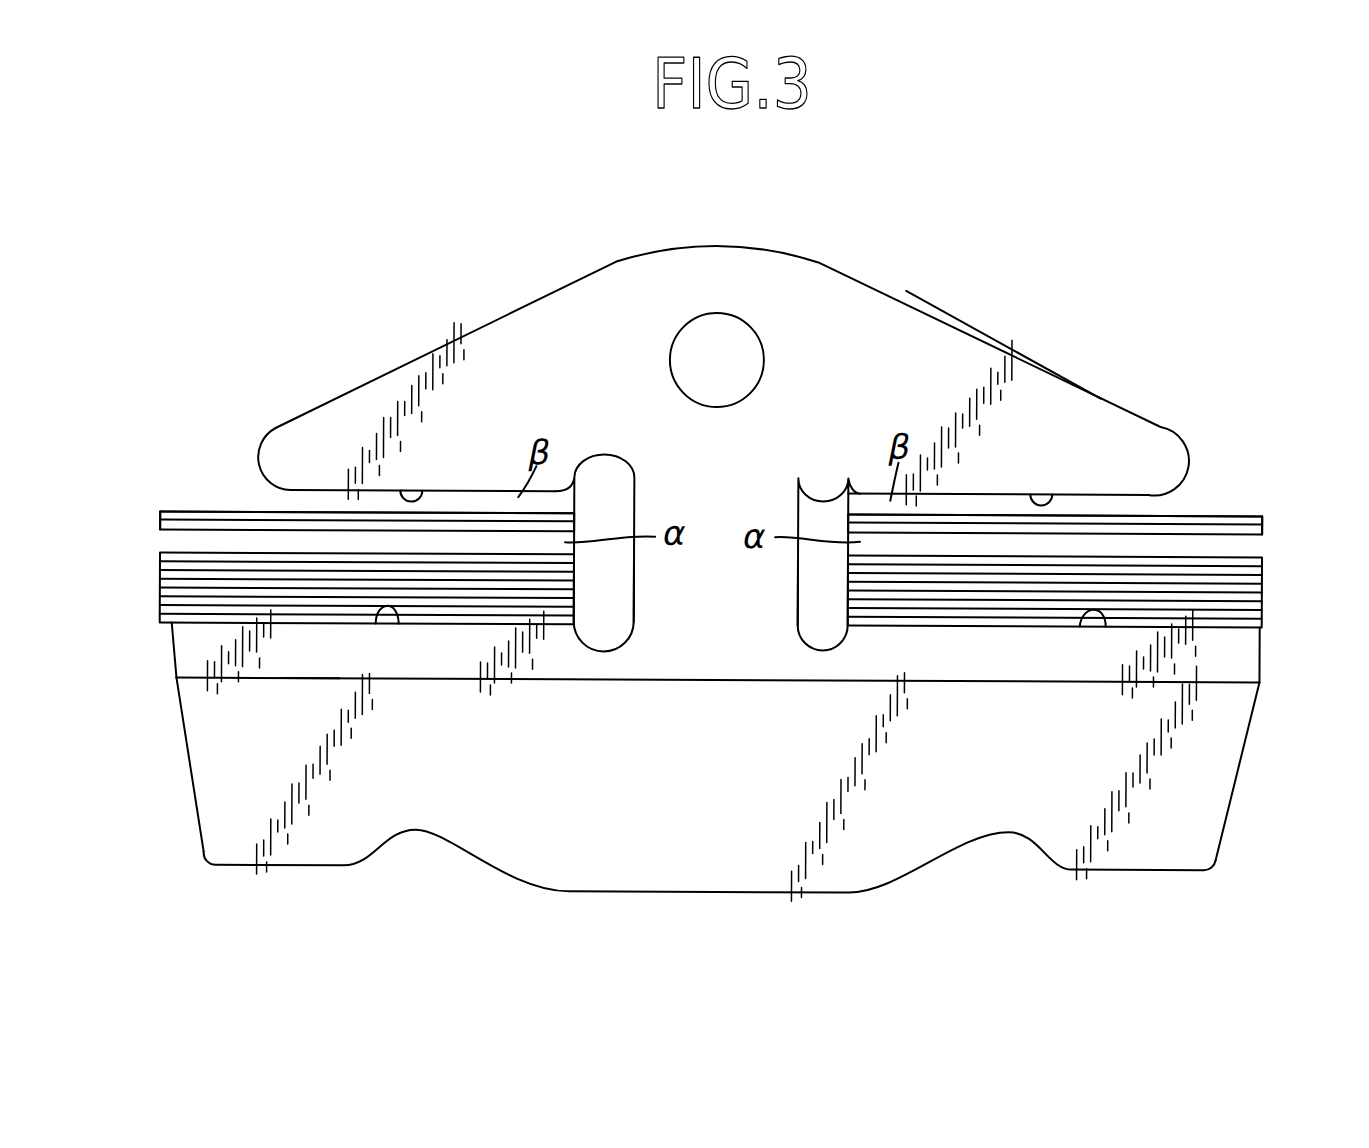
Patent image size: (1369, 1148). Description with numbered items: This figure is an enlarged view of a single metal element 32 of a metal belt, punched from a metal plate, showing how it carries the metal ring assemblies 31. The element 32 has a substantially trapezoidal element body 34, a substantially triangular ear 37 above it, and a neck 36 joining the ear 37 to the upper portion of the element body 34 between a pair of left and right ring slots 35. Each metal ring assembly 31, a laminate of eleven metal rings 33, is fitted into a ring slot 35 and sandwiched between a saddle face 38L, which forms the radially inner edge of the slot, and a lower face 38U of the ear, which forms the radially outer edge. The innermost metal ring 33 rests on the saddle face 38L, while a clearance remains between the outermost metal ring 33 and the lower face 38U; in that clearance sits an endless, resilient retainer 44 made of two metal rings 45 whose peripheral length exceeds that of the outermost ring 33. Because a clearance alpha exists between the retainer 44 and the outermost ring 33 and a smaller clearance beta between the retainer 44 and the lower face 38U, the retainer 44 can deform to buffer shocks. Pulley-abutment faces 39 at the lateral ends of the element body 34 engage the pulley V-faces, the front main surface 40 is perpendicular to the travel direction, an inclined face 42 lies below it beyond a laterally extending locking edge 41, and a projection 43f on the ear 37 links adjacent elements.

The metal ring assembly 31 is at (172, 552).
The metal element 32 is at (985, 330).
The metal ring 33 is at (172, 603).
The element body 34 is at (1207, 662).
The ring slot 35 is at (633, 598).
The neck 36 is at (725, 565).
The ear 37 is at (922, 335).
The lower face of the ear 38U is at (422, 492).
The saddle face 38L is at (399, 625).
The pulley-abutment face 39 is at (186, 742).
The main surface 40 is at (707, 624).
The locking edge 41 is at (317, 680).
The inclined face 42 is at (490, 824).
The projection 43f is at (727, 360).
The retainer 44 is at (257, 511).
The metal ring of retainer 45 is at (158, 524).